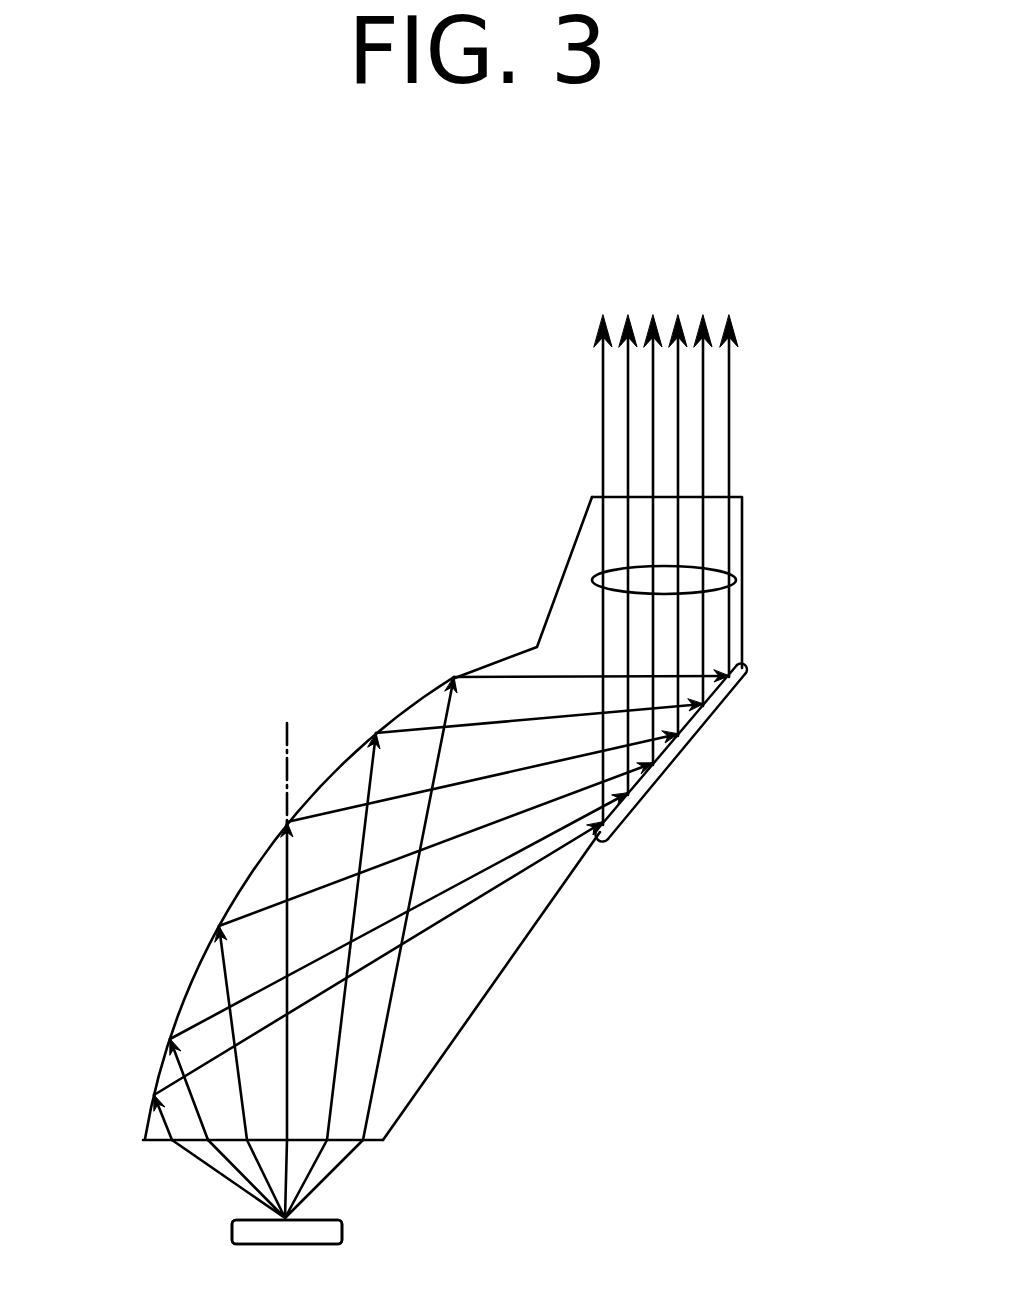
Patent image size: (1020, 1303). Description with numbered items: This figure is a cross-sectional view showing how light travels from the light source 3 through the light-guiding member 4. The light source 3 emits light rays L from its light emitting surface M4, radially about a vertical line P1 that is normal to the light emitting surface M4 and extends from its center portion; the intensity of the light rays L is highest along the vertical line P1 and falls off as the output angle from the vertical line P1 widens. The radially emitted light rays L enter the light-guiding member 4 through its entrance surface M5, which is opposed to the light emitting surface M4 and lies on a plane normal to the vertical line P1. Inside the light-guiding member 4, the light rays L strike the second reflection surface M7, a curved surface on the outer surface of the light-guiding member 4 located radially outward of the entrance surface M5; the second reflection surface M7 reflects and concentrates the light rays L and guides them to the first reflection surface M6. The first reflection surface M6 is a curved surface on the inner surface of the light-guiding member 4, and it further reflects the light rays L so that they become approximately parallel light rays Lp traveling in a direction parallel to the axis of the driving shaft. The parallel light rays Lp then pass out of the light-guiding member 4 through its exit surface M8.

The light source 3 is at (345, 1225).
The light-guiding member 4 is at (500, 558).
The light emitting surface M4 is at (238, 1220).
The entrance surface M5 is at (383, 1141).
The first reflection surface M6 is at (678, 752).
The second reflection surface M7 is at (440, 683).
The exit surface M8 is at (743, 497).
The parallel light rays Lp is at (736, 580).
The light rays L is at (383, 1056).
The vertical line P1 is at (283, 743).